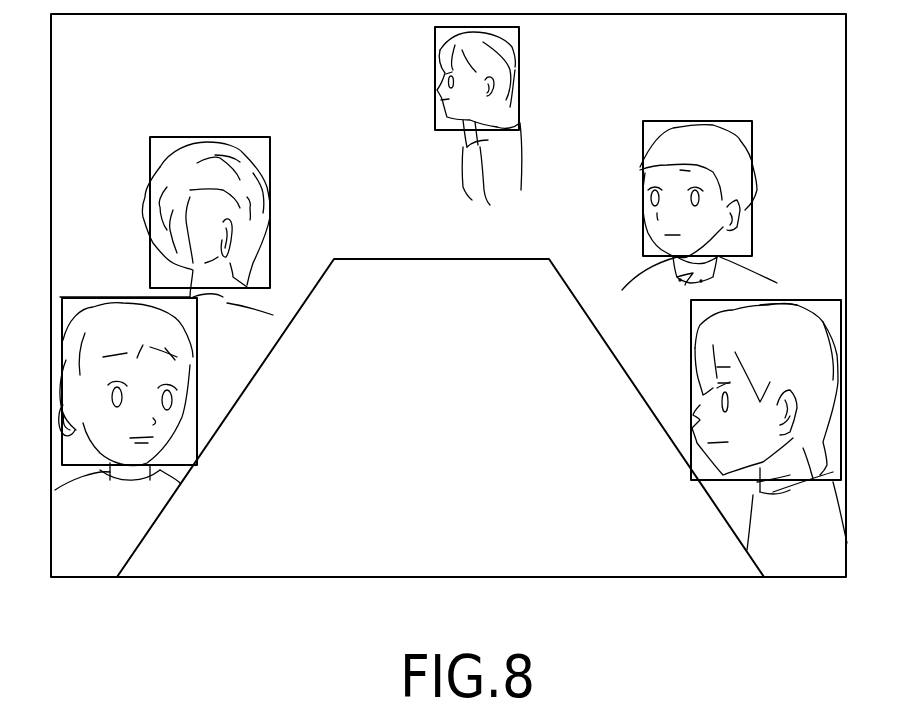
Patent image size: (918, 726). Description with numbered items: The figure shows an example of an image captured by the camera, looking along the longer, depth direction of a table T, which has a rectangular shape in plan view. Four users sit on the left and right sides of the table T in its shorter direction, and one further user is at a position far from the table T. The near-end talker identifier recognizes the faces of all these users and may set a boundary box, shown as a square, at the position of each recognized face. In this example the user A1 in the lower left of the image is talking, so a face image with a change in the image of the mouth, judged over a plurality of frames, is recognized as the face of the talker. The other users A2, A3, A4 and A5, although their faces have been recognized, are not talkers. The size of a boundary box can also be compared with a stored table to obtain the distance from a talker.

The table T is at (532, 258).
The user A1 is at (200, 390).
The user A2 is at (248, 137).
The user A3 is at (520, 82).
The user A4 is at (722, 120).
The user A5 is at (800, 300).